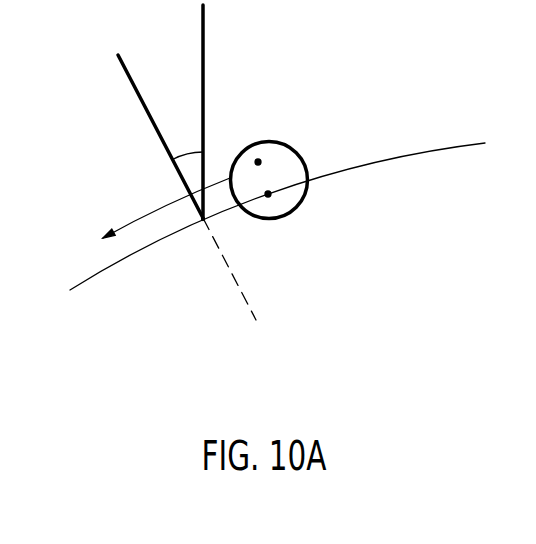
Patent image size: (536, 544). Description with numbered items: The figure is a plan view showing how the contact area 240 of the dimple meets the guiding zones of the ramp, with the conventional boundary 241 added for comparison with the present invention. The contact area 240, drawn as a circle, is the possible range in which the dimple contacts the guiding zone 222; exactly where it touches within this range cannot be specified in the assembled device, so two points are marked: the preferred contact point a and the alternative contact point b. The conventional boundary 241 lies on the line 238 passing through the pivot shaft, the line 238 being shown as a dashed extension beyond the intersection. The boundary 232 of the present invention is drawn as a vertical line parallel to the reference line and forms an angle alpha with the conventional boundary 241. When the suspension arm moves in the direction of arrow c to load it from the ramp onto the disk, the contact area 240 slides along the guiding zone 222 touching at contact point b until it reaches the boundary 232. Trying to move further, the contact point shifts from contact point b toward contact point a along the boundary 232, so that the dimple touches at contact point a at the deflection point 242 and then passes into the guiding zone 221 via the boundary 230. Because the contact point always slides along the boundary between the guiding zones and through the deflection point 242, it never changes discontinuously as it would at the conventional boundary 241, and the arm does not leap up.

The guiding zone 221 is at (62, 148).
The guiding zone 222 is at (373, 67).
The boundary 230 is at (408, 157).
The boundary 232 is at (207, 95).
The line 238 is at (223, 262).
The contact area 240 is at (309, 227).
The boundary 241 is at (143, 97).
The deflection point 242 is at (203, 223).
The contact point a is at (268, 194).
The contact point b is at (258, 162).
The arrow C c is at (166, 208).
The angle α alpha is at (188, 135).